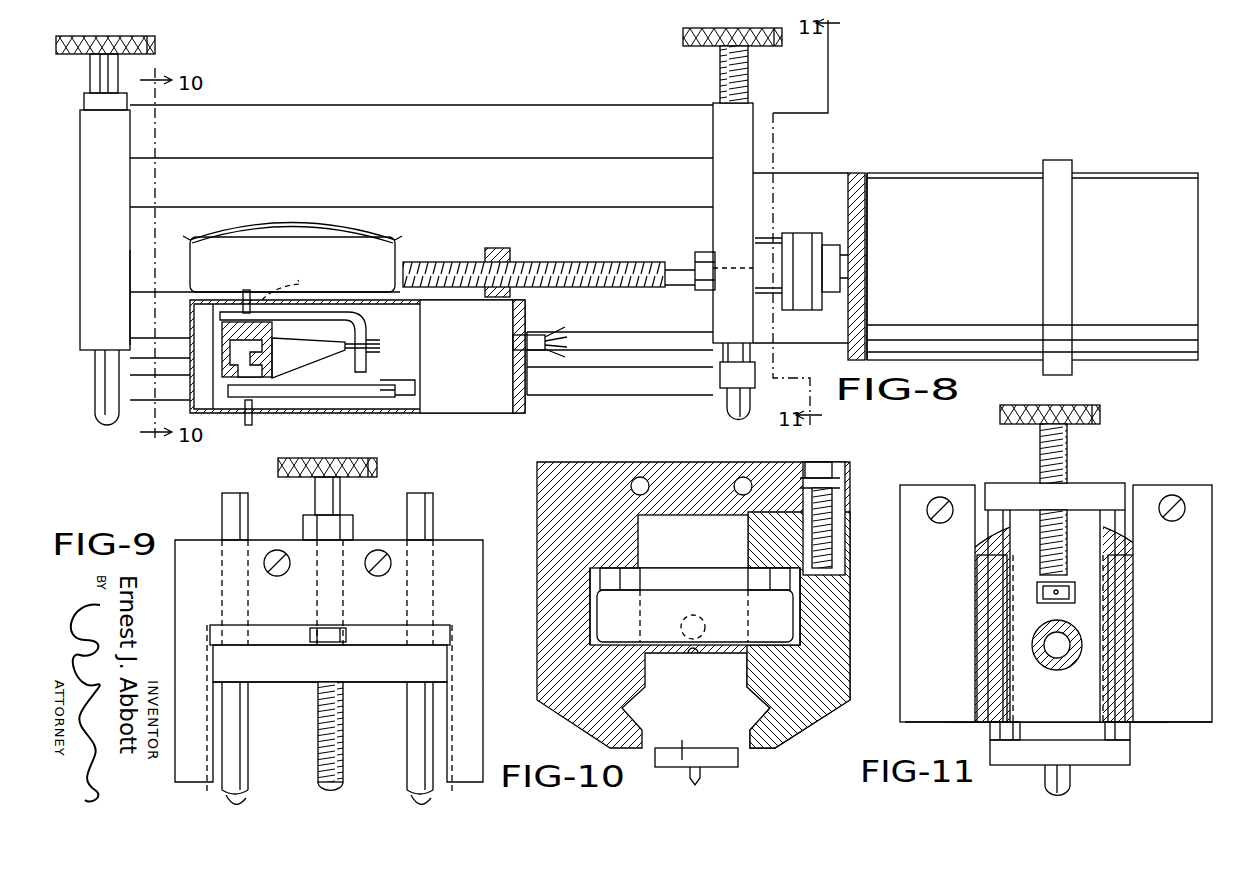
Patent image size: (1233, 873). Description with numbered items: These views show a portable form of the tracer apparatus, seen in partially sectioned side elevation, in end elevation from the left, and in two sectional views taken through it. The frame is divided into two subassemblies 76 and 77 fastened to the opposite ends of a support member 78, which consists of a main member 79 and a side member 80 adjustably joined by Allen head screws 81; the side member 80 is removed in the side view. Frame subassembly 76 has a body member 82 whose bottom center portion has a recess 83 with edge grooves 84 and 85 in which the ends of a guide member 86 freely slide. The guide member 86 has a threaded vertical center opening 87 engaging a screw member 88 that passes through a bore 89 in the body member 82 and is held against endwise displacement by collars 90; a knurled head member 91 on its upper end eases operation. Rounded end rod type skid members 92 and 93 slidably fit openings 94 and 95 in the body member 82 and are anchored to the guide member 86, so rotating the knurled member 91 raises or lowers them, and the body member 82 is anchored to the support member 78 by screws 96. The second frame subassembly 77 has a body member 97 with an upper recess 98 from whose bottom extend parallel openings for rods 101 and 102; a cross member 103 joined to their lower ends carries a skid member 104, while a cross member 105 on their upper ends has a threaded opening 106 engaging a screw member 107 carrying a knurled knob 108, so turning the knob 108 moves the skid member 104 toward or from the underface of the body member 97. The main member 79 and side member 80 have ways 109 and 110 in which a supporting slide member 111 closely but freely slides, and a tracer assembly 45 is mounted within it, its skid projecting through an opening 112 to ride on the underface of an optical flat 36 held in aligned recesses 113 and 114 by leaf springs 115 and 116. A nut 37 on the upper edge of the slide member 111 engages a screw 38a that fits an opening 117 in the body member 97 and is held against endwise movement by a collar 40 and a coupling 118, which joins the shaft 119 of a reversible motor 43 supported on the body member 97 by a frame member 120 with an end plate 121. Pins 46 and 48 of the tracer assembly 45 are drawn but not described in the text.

In FIG. 8, the optical flat 36 is at (190, 266).
In FIG. 10, the optical flat 36 is at (712, 612).
In FIG. 8, the nut 37 is at (510, 252).
In FIG. 8, the screw 38a is at (573, 262).
In FIG. 11, the screw 38a is at (1062, 660).
In FIG. 8, the collar 40 is at (706, 292).
In FIG. 8, the reversible motor 43 is at (940, 183).
In FIG. 8, the tracer assembly 45 is at (430, 413).
In FIG. 10, the tracer assembly 45 is at (712, 772).
In FIG. 8, the lower pin 46 is at (253, 425).
In FIG. 8, the upper pin 48 is at (246, 290).
In FIG. 8, the frame subassembly 76 is at (84, 195).
In FIG. 9, the frame subassembly 76 is at (184, 540).
In FIG. 8, the frame subassembly 77 is at (718, 112).
In FIG. 11, the frame subassembly 77 is at (932, 490).
In FIG. 8, the support member 78 is at (300, 108).
In FIG. 10, the support member 78 is at (586, 462).
In FIG. 10, the main member 79 is at (668, 462).
In FIG. 10, the side member 80 is at (850, 605).
In FIG. 10, the Allen head screws 81 is at (826, 462).
In FIG. 9, the body member 82 is at (172, 525).
In FIG. 9, the recess 83 is at (440, 712).
In FIG. 9, the edge groove 84 is at (198, 720).
In FIG. 9, the edge groove 85 is at (452, 790).
In FIG. 9, the guide member 86 is at (365, 675).
In FIG. 9, the vertical center opening 87 is at (312, 665).
In FIG. 9, the screw member 88 is at (345, 735).
In FIG. 9, the bore 89 is at (345, 540).
In FIG. 9, the collars 90 is at (312, 527).
In FIG. 8, the knurled head member 91 is at (156, 46).
In FIG. 9, the knurled head member 91 is at (379, 468).
In FIG. 9, the skid member 92 is at (243, 510).
In FIG. 9, the skid member 93 is at (425, 515).
In FIG. 9, the opening 94 is at (225, 583).
In FIG. 9, the opening 95 is at (435, 580).
In FIG. 9, the screws 96 is at (290, 570).
In FIG. 8, the body member 97 is at (748, 158).
In FIG. 11, the body member 97 is at (940, 485).
In FIG. 11, the recess 98 is at (1133, 490).
In FIG. 11, the rod 101 is at (998, 737).
In FIG. 11, the rod 102 is at (1118, 737).
In FIG. 11, the cross member 103 is at (1120, 762).
In FIG. 11, the skid member 104 is at (1065, 787).
In FIG. 11, the cross member 105 is at (1083, 490).
In FIG. 11, the threaded opening 106 is at (1045, 498).
In FIG. 11, the screw member 107 is at (1067, 440).
In FIG. 8, the knurled knob 108 is at (683, 38).
In FIG. 11, the knurled knob 108 is at (1102, 415).
In FIG. 10, the way 109 is at (612, 744).
In FIG. 10, the way 110 is at (765, 750).
In FIG. 8, the supporting slide member 111 is at (528, 398).
In FIG. 10, the supporting slide member 111 is at (682, 760).
In FIG. 8, the opening 112 is at (304, 278).
In FIG. 8, the recess 113 is at (140, 252).
In FIG. 10, the recess 113 is at (596, 585).
In FIG. 10, the recess 114 is at (795, 585).
In FIG. 8, the leaf spring 115 is at (325, 228).
In FIG. 10, the leaf spring 115 is at (620, 582).
In FIG. 10, the leaf spring 116 is at (770, 582).
In FIG. 8, the opening 117 is at (716, 258).
In FIG. 8, the coupling 118 is at (786, 245).
In FIG. 11, the coupling 118 is at (1052, 632).
In FIG. 8, the shaft 119 is at (862, 268).
In FIG. 8, the frame member 120 is at (814, 178).
In FIG. 11, the frame member 120 is at (965, 580).
In FIG. 8, the end plate 121 is at (870, 180).